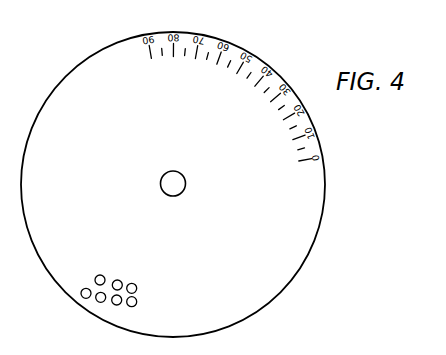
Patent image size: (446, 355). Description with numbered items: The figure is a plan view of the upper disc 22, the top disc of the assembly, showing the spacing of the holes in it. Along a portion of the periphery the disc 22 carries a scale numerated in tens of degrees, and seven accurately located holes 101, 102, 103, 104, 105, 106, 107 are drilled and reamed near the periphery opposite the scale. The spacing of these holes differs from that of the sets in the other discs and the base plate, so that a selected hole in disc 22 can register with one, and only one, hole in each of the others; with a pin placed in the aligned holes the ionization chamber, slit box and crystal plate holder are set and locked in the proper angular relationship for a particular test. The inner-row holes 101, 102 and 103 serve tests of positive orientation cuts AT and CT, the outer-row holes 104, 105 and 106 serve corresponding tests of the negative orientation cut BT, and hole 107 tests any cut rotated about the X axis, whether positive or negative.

The upper disc 22 is at (282, 273).
The hole 101 is at (145, 278).
The hole 102 is at (118, 280).
The hole 103 is at (100, 274).
The hole 104 is at (130, 306).
The hole 105 is at (114, 304).
The hole 106 is at (96, 300).
The hole 107 is at (80, 293).